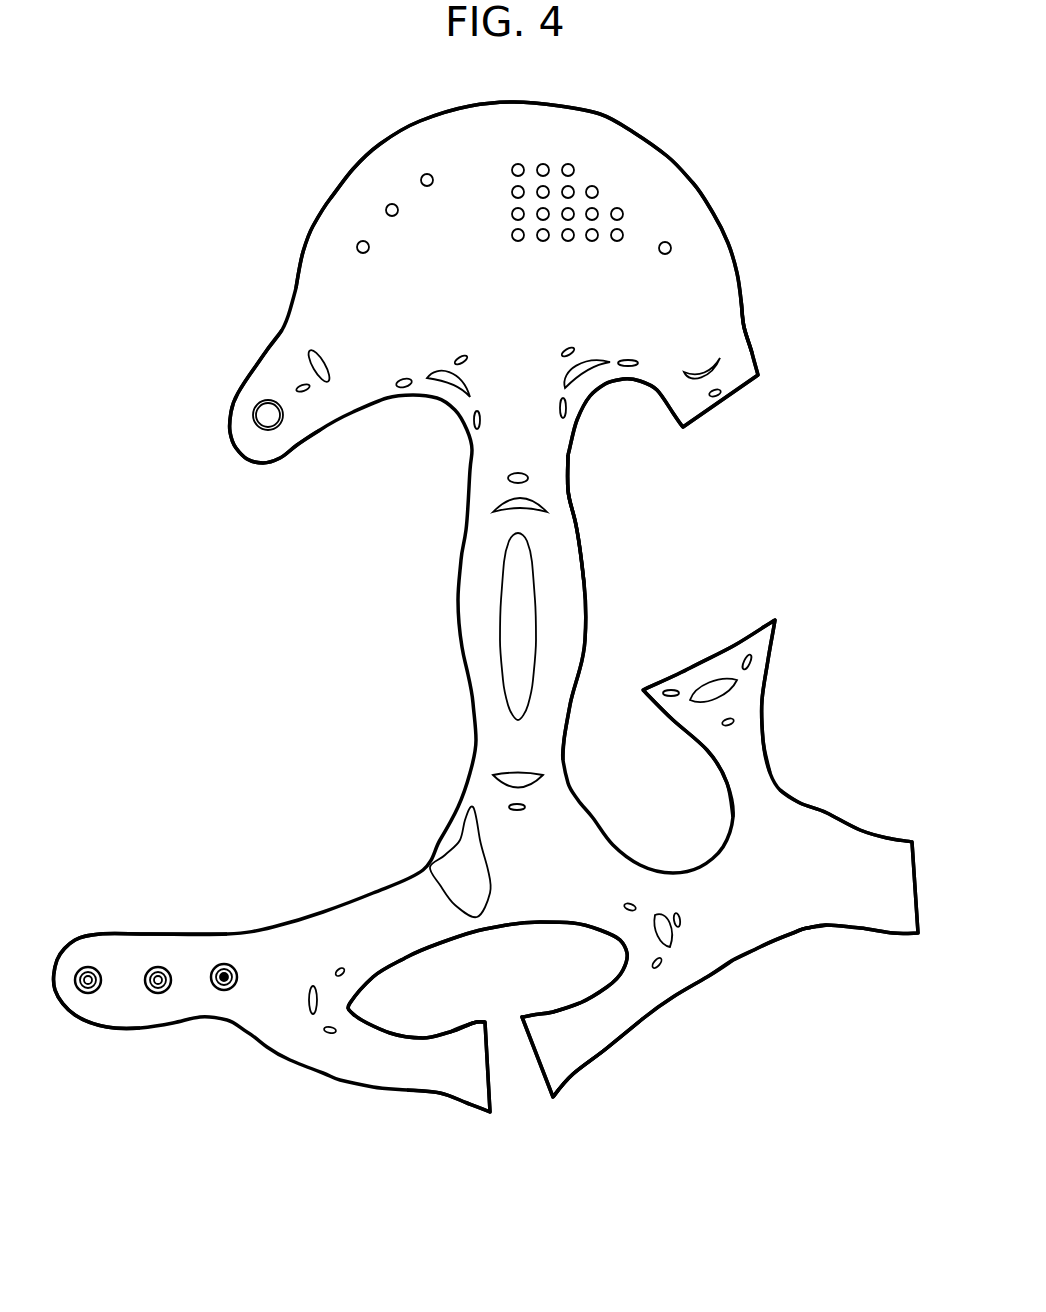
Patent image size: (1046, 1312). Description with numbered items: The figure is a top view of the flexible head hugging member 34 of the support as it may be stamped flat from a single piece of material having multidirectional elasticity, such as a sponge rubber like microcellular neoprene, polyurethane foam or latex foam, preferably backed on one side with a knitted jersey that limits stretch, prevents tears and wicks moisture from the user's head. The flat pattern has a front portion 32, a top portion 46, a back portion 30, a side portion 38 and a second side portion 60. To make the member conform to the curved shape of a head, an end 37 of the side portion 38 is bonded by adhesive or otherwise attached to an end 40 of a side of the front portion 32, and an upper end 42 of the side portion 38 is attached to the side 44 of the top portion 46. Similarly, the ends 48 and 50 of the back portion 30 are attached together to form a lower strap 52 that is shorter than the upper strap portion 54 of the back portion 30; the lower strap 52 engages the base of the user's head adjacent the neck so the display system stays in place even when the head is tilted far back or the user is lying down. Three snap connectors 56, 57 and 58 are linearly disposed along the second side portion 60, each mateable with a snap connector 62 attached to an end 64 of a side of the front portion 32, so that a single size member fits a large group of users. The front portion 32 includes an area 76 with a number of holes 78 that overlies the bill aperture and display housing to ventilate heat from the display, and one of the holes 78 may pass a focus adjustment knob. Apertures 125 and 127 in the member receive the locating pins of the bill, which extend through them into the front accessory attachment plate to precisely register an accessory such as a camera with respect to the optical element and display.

The back portion 30 is at (581, 875).
The front portion 32 is at (545, 128).
The head hugging member 34 is at (736, 232).
The end of side portion 37 is at (743, 441).
The side portion 38 is at (800, 935).
The end of a side of the front portion 40 is at (745, 385).
The upper end of side portion 42 is at (609, 608).
The side of top portion 44 is at (588, 588).
The top portion 46 is at (582, 528).
The end of back portion 48 is at (492, 1082).
The end of back portion 50 is at (537, 1077).
The lower strap 52 is at (615, 1053).
The upper strap portion 54 is at (501, 932).
The snap connector 56 is at (90, 967).
The snap connector 57 is at (160, 967).
The snap connector 58 is at (230, 964).
The second side portion 60 is at (95, 999).
The snap connector 62 is at (280, 424).
The end of a side of the front portion 64 is at (247, 462).
The area with holes 76 is at (588, 176).
The holes 78 is at (603, 188).
The aperture 125 is at (387, 204).
The aperture 127 is at (427, 173).